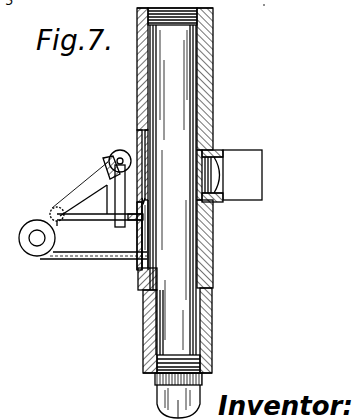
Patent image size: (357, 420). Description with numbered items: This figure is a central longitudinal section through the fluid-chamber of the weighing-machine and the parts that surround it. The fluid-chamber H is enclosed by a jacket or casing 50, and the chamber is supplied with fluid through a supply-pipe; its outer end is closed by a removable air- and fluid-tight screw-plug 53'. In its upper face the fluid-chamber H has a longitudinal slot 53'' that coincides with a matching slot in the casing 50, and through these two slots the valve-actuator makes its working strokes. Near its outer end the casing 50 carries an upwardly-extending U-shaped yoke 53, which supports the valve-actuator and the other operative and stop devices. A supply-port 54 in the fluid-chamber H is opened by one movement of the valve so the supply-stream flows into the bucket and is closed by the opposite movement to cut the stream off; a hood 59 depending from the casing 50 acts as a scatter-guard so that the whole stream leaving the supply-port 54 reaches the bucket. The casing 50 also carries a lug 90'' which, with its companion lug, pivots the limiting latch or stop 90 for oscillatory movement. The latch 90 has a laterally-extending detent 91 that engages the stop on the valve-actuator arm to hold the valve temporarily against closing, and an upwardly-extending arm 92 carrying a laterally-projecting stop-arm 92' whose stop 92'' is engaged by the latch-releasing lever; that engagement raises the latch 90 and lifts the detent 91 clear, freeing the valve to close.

The fluid-chamber-surrounding jacket or casing 50 is at (137, 105).
The fluid-chamber H is at (143, 303).
The screw-plug 53' is at (201, 389).
The casing or hood 59 is at (253, 188).
The supply-port 54 is at (205, 172).
The limiting latch or stop 90 is at (101, 161).
The bracket or lug 90'' is at (117, 153).
The limiting stop-arm or detent 91 is at (128, 204).
The upwardly-extending arm 92 is at (94, 191).
The stop-arm 92' is at (42, 214).
The stop 92'' is at (54, 238).
The U-shaped yoke 53 is at (93, 267).
The longitudinal slot 53'' is at (127, 234).